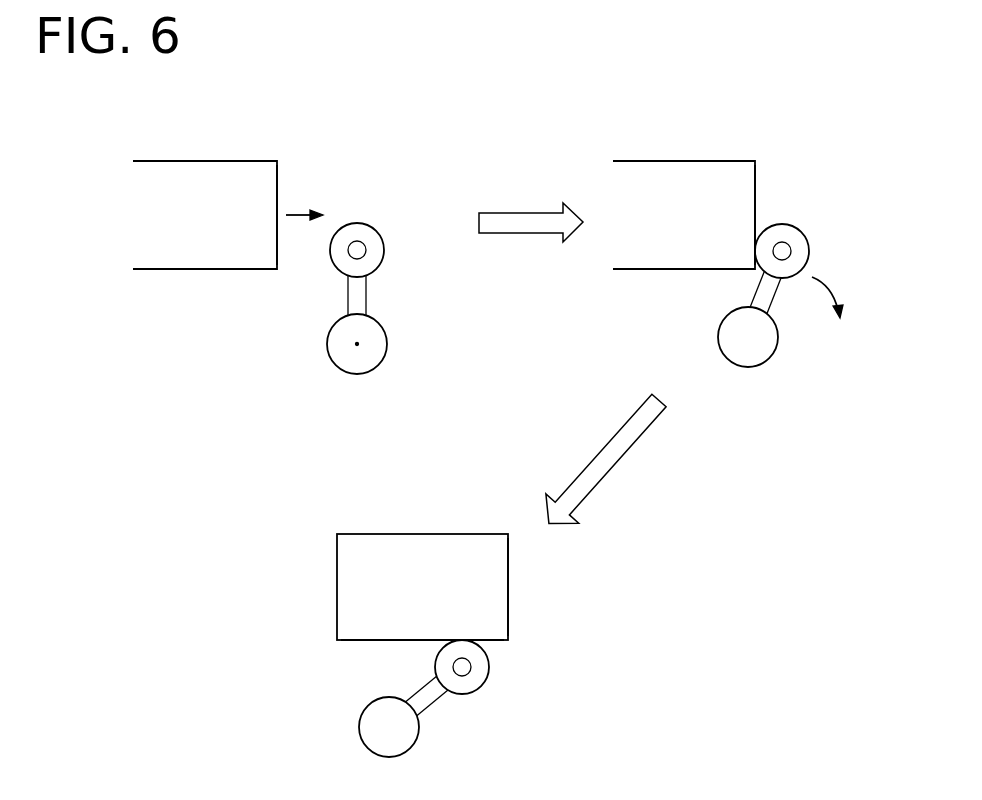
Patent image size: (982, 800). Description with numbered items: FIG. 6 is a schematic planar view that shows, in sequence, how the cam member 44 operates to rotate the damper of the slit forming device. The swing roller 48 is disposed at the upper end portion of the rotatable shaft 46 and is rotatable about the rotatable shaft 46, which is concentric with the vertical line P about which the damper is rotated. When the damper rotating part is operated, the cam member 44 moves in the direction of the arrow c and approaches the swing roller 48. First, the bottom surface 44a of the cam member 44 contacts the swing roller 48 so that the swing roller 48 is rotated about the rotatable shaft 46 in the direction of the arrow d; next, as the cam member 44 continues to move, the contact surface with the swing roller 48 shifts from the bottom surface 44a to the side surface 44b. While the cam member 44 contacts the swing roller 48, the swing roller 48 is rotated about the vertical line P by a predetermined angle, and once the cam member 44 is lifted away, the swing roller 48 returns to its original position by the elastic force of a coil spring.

The cam member 44 is at (196, 158).
The bottom surface 44a is at (278, 180).
The side surface 44b is at (194, 270).
The rotatable shaft 46 is at (383, 344).
The swing roller 48 is at (365, 232).
The vertical line P is at (354, 344).
The arrow c is at (300, 208).
The arrow d is at (827, 293).